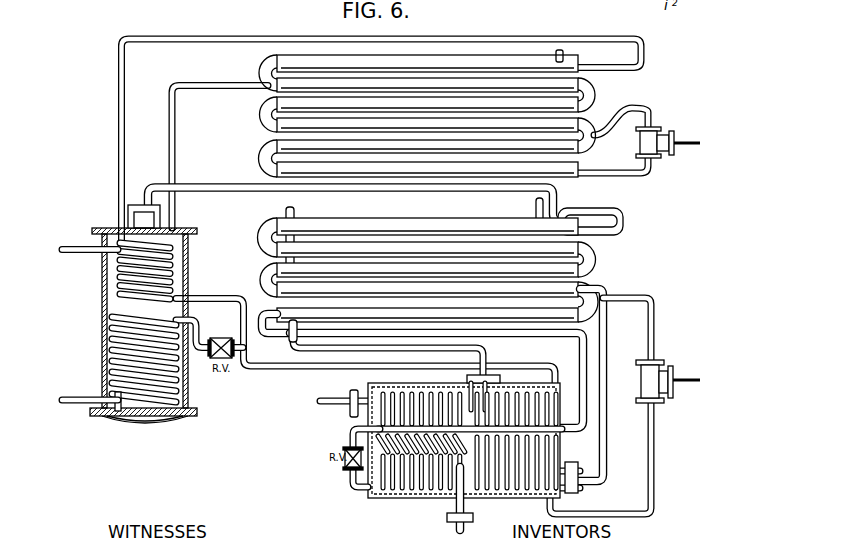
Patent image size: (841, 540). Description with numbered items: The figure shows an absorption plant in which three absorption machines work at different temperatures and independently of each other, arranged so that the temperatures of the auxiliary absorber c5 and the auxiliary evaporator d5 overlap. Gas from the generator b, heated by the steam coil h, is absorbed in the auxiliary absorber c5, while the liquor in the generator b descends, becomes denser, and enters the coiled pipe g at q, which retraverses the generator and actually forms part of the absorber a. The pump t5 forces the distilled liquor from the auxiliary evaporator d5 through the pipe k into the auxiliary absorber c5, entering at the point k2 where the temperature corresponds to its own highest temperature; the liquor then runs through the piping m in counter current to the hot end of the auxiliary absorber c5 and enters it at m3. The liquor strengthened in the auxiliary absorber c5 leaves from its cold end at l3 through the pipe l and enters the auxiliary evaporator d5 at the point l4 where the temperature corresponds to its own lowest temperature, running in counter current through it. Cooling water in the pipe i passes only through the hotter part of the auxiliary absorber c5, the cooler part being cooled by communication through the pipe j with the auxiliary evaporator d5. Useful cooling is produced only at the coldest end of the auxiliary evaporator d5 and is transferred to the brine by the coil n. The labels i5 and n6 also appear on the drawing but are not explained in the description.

The absorber a is at (508, 65).
The cooling water pipe i is at (566, 56).
The auxiliary absorber c5 is at (352, 272).
The piping m is at (620, 236).
The hot-end entry point m3 is at (620, 222).
The entry point of pipe k k2 is at (604, 285).
The pipe k is at (653, 310).
The pump t5 is at (661, 367).
The generator b is at (189, 268).
The coiled pipe g is at (103, 349).
The entry point of pipe g q is at (132, 417).
The steam coil h is at (77, 247).
The cold-end outlet point l3 is at (272, 306).
The pipe l is at (270, 336).
The pipe j is at (307, 349).
The brine coil n is at (330, 406).
The auxiliary evaporator d5 is at (380, 498).
The entry point of pipe l l4 is at (586, 429).
The bypass pipe with relief valve i5 is at (362, 496).
The bottom nozzle n6 is at (455, 528).